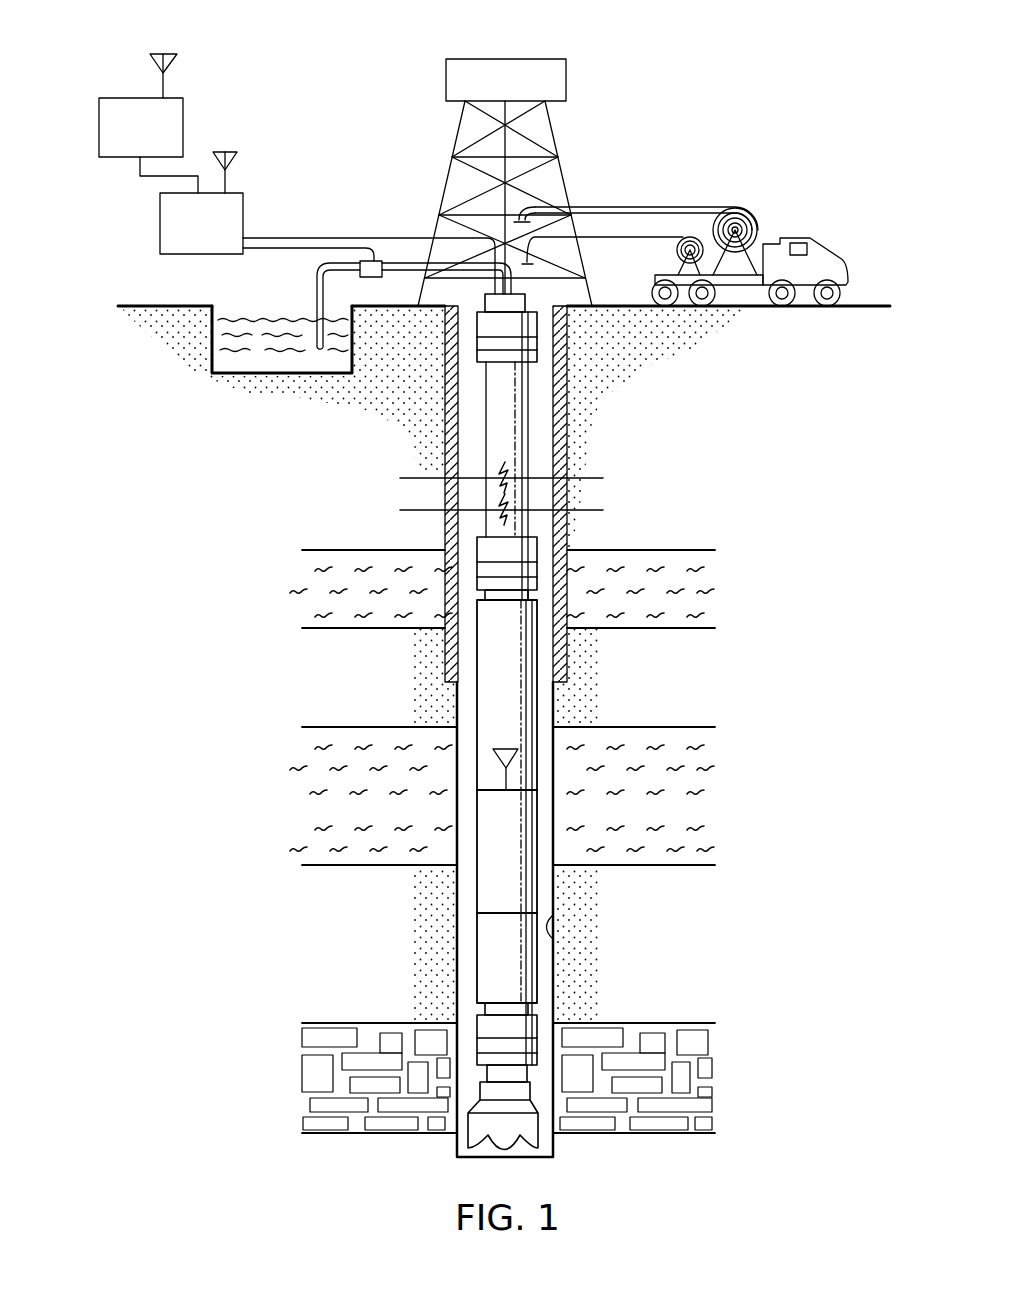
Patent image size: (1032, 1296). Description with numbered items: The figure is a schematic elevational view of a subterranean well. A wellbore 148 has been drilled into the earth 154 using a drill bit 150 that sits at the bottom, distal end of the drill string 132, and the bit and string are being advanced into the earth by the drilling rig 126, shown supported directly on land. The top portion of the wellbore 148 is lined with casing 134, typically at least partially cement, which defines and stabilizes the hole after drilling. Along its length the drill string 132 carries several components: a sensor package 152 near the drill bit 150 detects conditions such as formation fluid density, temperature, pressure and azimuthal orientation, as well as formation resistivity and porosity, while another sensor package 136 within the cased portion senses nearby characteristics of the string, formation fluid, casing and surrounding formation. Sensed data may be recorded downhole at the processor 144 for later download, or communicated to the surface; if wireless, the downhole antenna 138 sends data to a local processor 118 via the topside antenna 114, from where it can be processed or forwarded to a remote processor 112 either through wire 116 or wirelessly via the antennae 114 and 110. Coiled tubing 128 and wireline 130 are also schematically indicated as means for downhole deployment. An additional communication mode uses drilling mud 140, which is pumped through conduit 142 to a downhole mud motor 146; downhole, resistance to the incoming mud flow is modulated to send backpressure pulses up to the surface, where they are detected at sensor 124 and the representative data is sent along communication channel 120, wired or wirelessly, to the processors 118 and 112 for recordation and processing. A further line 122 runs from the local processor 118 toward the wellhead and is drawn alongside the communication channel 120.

The antenna 110 is at (168, 53).
The processor 112 is at (185, 122).
The topside antenna 114 is at (237, 160).
The wire 116 is at (135, 168).
The local processor 118 is at (167, 232).
The communication channel 120 is at (260, 249).
The communication line 122 is at (322, 237).
The sensor 124 is at (378, 260).
The drilling rig 126 is at (580, 142).
The coiled tubing 128 is at (769, 190).
The wireline 130 is at (658, 258).
The drill string 132 is at (507, 418).
The casing 134 is at (563, 453).
The sensor package 136 is at (520, 552).
The downhole antenna 138 is at (510, 748).
The drilling mud 140 is at (245, 363).
The conduit 142 is at (318, 282).
The processor 144 is at (487, 878).
The downhole mud motor 146 is at (487, 980).
The wellbore 148 is at (556, 937).
The drill bit 150 is at (527, 1130).
The sensor package 152 is at (482, 1027).
The earth 154 is at (398, 434).